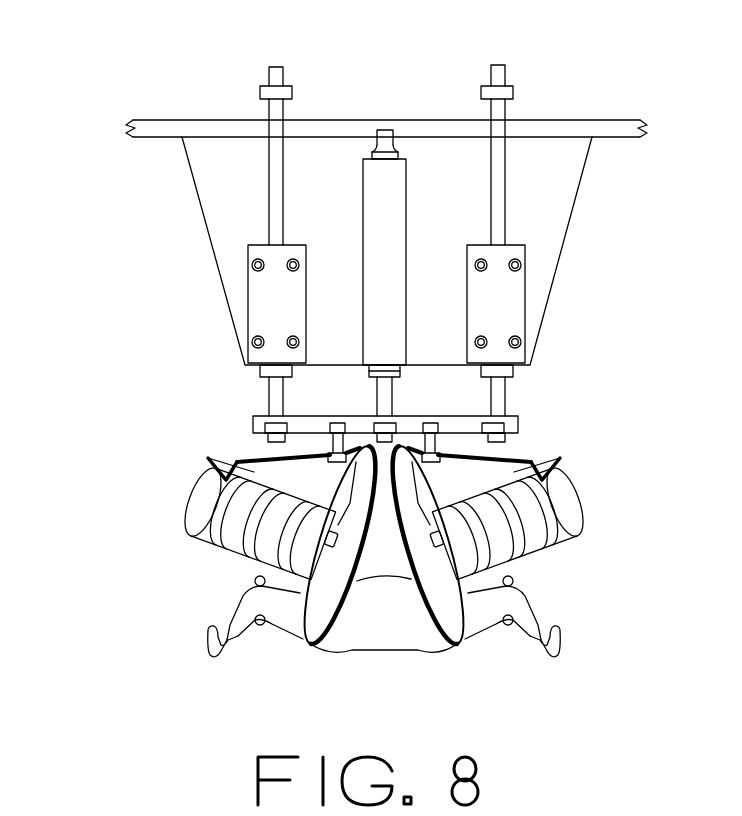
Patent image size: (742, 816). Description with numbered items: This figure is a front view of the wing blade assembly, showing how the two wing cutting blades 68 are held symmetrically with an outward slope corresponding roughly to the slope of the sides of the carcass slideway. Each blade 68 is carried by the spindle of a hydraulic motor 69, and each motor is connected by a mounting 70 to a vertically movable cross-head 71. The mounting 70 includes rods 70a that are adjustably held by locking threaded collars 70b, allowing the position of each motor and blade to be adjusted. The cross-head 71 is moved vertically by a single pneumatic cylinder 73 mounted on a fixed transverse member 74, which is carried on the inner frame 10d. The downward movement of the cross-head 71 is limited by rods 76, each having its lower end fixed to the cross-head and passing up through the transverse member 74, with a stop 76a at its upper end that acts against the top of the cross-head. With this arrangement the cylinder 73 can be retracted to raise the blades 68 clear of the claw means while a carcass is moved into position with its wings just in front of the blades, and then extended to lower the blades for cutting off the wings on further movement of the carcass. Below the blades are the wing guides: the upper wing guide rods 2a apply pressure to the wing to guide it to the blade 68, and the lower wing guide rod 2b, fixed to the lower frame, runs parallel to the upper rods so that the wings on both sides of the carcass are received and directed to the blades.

The inner frame 10d is at (630, 128).
The fixed transverse member 74 is at (547, 228).
The rods 76 is at (495, 160).
The stop 76a is at (485, 90).
The pneumatic cylinder 73 is at (383, 223).
The vertically movable cross-head 71 is at (519, 424).
The rods 70a is at (333, 445).
The locking threaded collars 70b is at (333, 454).
The mounting 70 is at (207, 458).
The hydraulic motor 69 is at (573, 512).
The wing cutting blade 68 is at (445, 608).
The upper wing guide rods 2a is at (522, 578).
The lower wing guide rod 2b is at (510, 630).